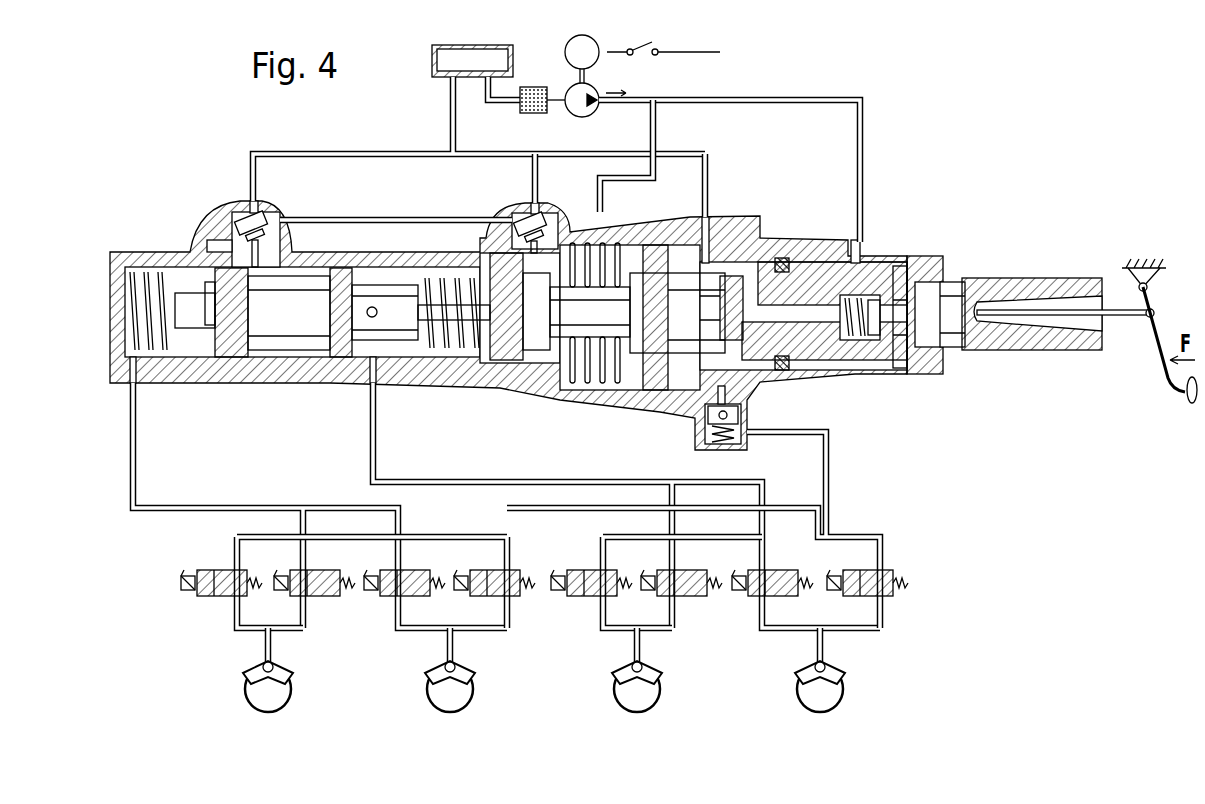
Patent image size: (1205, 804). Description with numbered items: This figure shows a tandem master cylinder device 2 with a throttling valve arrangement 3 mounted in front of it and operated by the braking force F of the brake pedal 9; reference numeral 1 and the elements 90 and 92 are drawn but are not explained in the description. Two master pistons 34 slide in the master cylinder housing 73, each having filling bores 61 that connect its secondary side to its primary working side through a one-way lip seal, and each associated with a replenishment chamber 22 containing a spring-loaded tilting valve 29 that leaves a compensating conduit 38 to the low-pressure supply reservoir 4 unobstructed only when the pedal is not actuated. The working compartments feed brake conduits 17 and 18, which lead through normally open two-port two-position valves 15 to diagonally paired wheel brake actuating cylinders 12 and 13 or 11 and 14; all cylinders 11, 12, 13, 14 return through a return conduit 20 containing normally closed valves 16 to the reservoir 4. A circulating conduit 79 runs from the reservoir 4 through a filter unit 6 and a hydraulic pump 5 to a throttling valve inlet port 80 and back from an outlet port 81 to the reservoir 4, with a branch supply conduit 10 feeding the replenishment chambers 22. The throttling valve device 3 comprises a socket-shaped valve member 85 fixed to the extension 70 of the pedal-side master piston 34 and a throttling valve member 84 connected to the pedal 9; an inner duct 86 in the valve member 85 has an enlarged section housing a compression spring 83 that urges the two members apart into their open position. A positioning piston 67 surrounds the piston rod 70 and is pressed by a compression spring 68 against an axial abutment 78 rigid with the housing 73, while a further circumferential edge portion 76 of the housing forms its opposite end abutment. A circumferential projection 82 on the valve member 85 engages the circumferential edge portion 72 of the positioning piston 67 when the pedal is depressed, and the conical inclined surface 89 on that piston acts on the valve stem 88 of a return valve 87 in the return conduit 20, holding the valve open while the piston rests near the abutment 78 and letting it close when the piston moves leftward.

The brake system 1 is at (262, 140).
The master cylinder device 2 is at (286, 388).
The throttling valve arrangement 3 is at (792, 190).
The low-pressure supply reservoir 4 is at (432, 58).
The hydraulic pump 5 is at (592, 116).
The filter unit 6 is at (540, 113).
The brake pedal 9 is at (1165, 388).
The hydraulic supply conduit 10 is at (656, 178).
The wheel brake actuating cylinder 11 is at (651, 667).
The wheel brake actuating cylinder 12 is at (282, 667).
The wheel brake actuating cylinder 13 is at (464, 667).
The wheel brake actuating cylinder 14 is at (834, 667).
The normally open two-port two-position valve 15 is at (312, 596).
The normally closed two-port two-position valve 16 is at (220, 596).
The brake conduit 17 is at (137, 445).
The brake conduit 18 is at (379, 440).
The return conduit 20 is at (540, 512).
The replenishment chamber 22 is at (230, 236).
The tilting valve 29 is at (246, 216).
The master piston 34 is at (560, 340).
The compensating conduit 38 is at (334, 154).
The filling bores 61 is at (290, 259).
The positioning piston 67 is at (614, 378).
The compression spring 68 is at (590, 386).
The master piston rod 70 is at (545, 355).
The circumferential edge portion 72 is at (740, 276).
The master cylinder housing 73 is at (498, 368).
The circumferential edge portion 76 is at (790, 262).
The axial abutment 78 is at (660, 402).
The circulating conduit 79 is at (768, 100).
The throttling valve inlet port 80 is at (862, 242).
The throttling valve outlet port 81 is at (712, 217).
The circumferential projection 82 is at (768, 262).
The compression spring 83 is at (878, 262).
The throttling valve member 84 is at (896, 372).
The valve member 85 is at (866, 352).
The inner duct 86 is at (822, 325).
The return valve 87 is at (700, 440).
The valve stem 88 is at (742, 404).
The inclined surface 89 is at (768, 386).
The seal 90 is at (652, 245).
The spring 92 is at (584, 245).